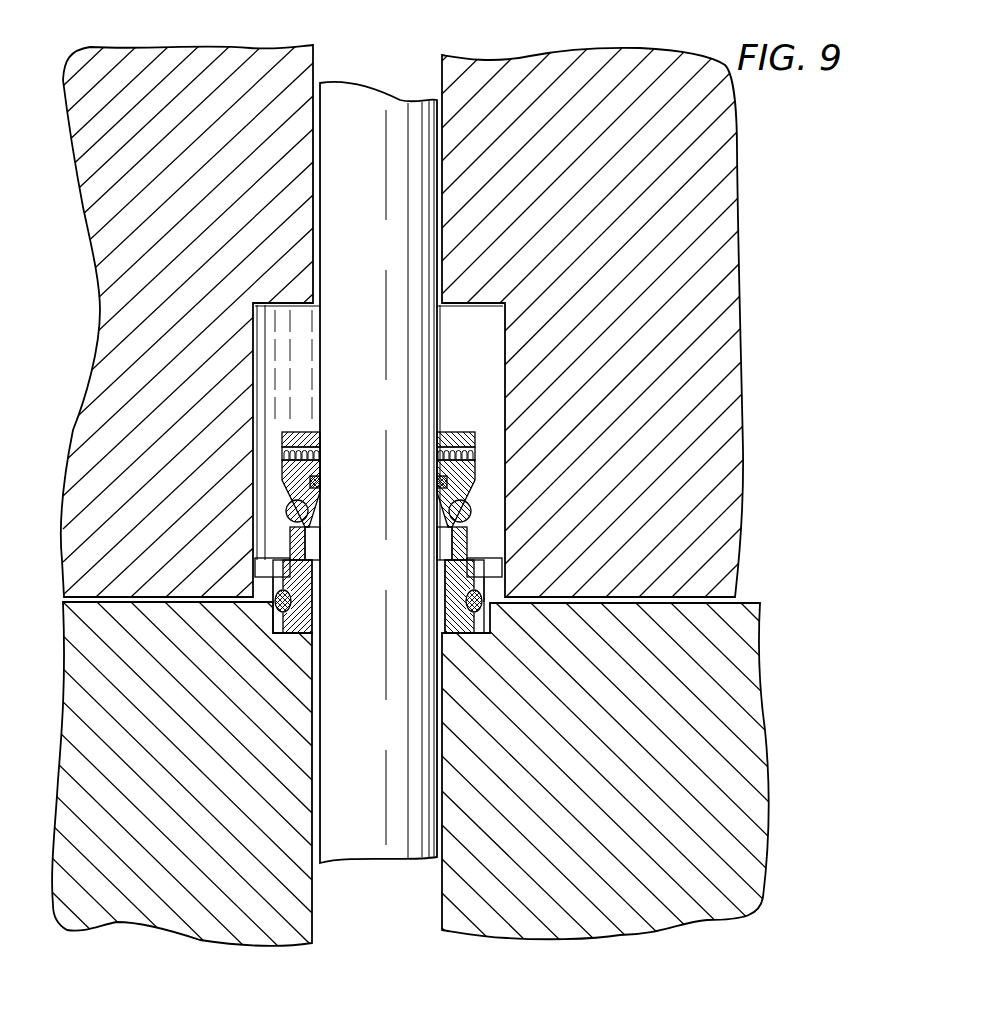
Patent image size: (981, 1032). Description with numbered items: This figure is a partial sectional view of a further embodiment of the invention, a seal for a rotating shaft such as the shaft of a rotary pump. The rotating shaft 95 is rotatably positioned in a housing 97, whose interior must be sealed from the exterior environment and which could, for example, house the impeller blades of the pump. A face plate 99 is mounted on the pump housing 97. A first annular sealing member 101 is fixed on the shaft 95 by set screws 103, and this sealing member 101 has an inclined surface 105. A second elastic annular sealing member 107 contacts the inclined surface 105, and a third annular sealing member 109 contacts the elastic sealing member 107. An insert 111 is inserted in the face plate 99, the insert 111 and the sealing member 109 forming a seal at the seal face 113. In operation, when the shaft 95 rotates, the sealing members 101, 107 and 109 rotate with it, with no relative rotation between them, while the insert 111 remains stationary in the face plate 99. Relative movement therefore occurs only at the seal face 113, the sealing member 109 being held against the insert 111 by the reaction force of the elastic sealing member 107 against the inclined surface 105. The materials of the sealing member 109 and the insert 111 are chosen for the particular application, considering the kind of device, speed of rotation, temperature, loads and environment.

The rotating shaft 95 is at (383, 866).
The housing 97 is at (564, 57).
The face plate 99 is at (216, 942).
The first annular sealing member 101 is at (303, 432).
The set screws 103 is at (286, 452).
The inclined surface 105 is at (287, 480).
The second elastic annular sealing member 107 is at (287, 512).
The third annular sealing member 109 is at (292, 545).
The insert 111 is at (290, 640).
The seal face 113 is at (263, 567).